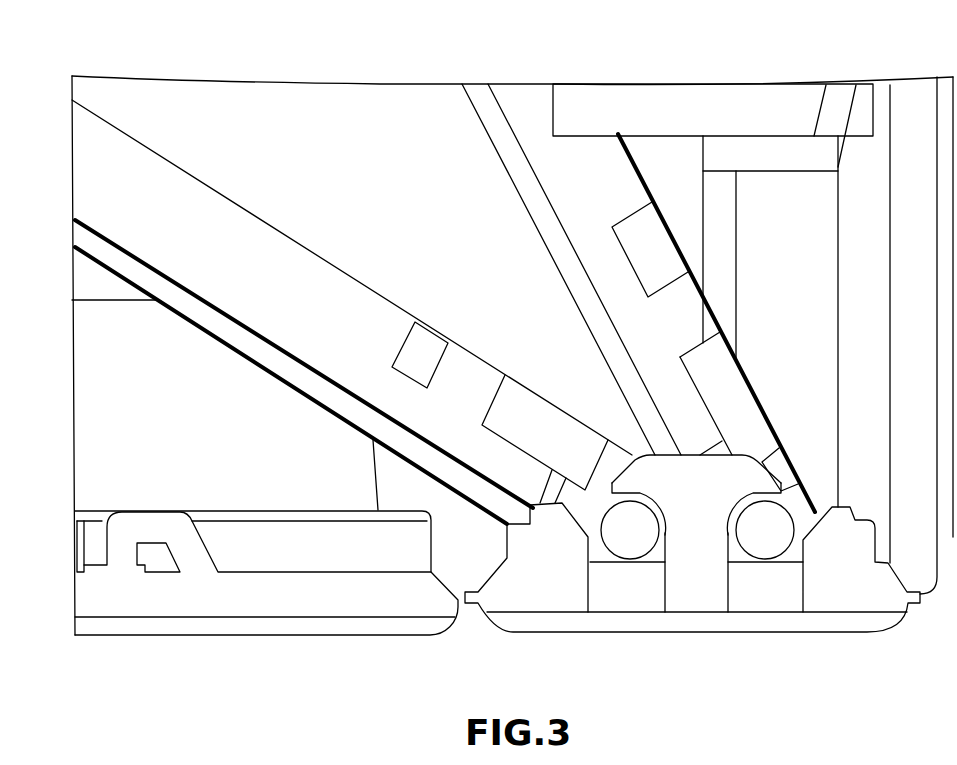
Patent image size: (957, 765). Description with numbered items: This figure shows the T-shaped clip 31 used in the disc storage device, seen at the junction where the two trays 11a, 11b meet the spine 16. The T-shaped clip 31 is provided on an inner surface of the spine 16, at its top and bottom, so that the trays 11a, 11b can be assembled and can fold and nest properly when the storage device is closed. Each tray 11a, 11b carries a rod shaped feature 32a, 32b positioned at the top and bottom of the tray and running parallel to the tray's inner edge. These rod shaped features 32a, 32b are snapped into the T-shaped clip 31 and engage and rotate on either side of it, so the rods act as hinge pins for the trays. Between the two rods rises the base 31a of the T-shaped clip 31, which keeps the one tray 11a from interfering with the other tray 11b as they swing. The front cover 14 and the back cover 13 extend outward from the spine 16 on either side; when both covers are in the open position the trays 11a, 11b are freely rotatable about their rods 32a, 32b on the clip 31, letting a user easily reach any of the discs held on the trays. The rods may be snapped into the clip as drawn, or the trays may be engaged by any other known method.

The tray 11a is at (533, 105).
The tray 11b is at (442, 430).
The back cover 13 is at (275, 628).
The front cover 14 is at (907, 93).
The spine 16 is at (662, 620).
The T-shaped clip 31 is at (695, 467).
The base of the T-shaped clip 31a is at (682, 590).
The rod shaped feature 32a is at (772, 547).
The rod shaped feature 32b is at (623, 547).